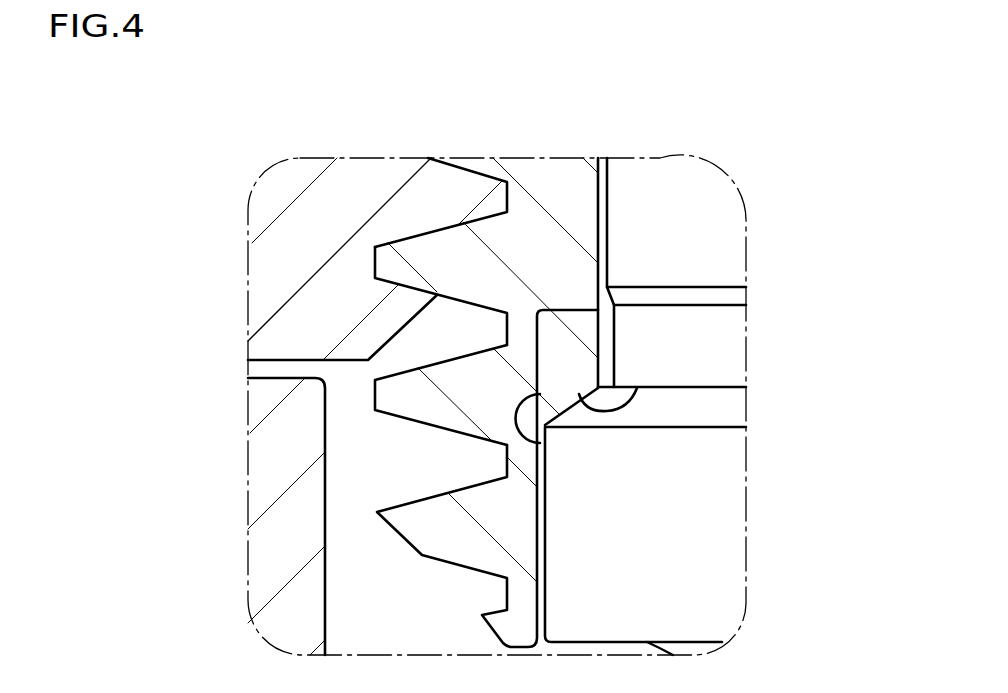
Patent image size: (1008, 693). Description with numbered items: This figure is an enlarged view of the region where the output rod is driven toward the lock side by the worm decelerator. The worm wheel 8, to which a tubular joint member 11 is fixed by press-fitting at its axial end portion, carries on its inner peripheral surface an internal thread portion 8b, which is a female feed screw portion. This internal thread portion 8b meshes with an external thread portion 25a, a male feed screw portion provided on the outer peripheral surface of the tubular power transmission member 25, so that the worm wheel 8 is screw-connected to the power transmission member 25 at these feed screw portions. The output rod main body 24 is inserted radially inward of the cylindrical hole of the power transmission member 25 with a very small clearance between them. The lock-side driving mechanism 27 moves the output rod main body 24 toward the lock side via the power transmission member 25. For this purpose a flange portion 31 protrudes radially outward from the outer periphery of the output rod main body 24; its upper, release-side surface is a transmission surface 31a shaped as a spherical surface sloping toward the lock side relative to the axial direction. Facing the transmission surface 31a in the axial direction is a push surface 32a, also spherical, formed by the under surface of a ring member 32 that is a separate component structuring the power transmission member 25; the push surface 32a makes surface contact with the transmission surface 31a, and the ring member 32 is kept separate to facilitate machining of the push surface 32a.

The worm wheel 8 is at (295, 203).
The internal thread portion 8b is at (470, 160).
The joint member 11 is at (273, 573).
The output rod main body 24 is at (720, 238).
The power transmission member 25 is at (542, 177).
The external thread portion 25a is at (405, 418).
The lock-side driving mechanism 27 is at (568, 382).
The flange portion 31 is at (720, 570).
The transmission surface 31a is at (537, 445).
The ring member 32 is at (587, 328).
The push surface 32a is at (627, 403).